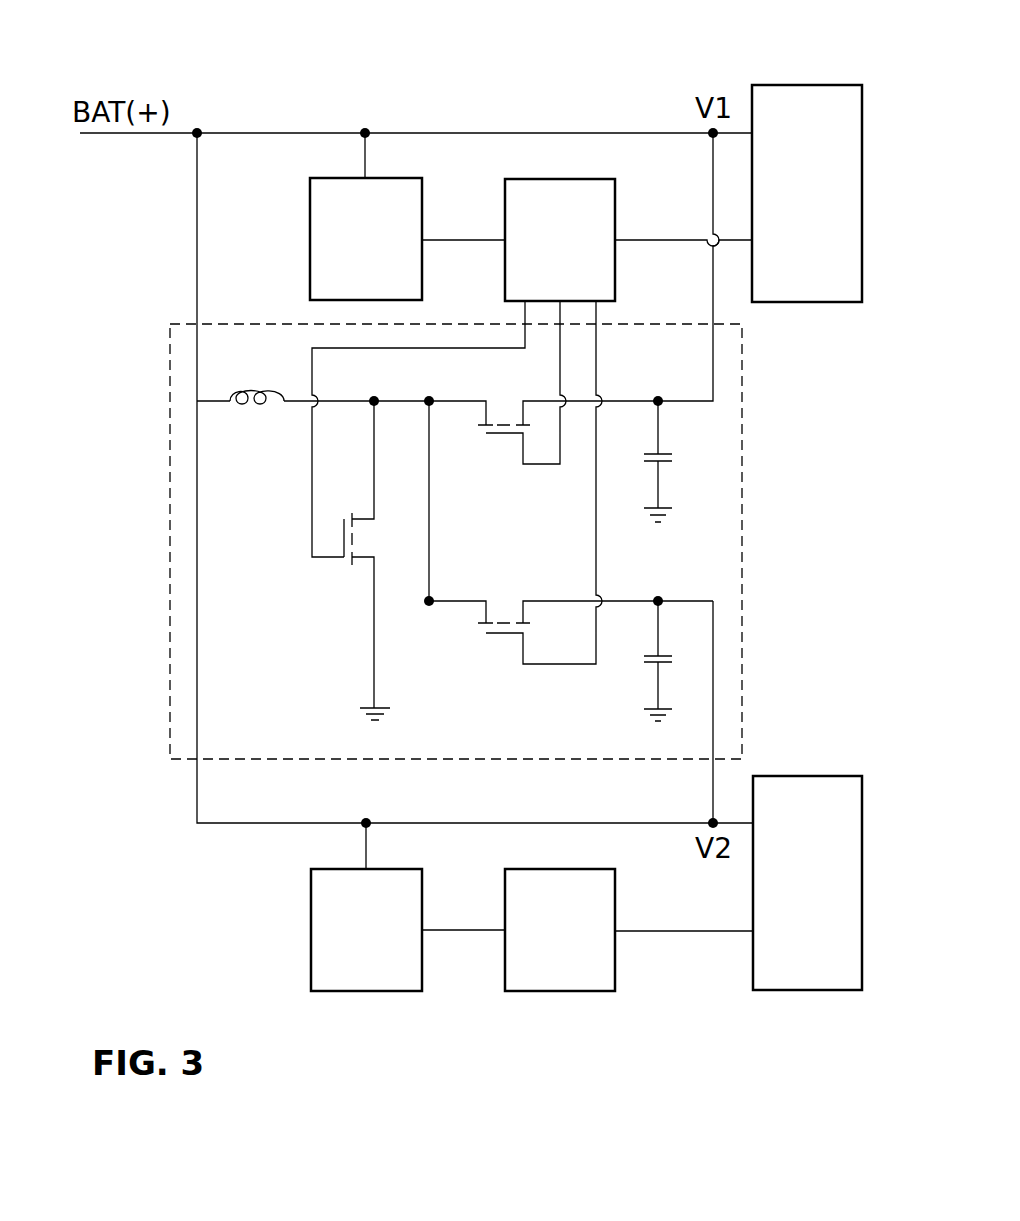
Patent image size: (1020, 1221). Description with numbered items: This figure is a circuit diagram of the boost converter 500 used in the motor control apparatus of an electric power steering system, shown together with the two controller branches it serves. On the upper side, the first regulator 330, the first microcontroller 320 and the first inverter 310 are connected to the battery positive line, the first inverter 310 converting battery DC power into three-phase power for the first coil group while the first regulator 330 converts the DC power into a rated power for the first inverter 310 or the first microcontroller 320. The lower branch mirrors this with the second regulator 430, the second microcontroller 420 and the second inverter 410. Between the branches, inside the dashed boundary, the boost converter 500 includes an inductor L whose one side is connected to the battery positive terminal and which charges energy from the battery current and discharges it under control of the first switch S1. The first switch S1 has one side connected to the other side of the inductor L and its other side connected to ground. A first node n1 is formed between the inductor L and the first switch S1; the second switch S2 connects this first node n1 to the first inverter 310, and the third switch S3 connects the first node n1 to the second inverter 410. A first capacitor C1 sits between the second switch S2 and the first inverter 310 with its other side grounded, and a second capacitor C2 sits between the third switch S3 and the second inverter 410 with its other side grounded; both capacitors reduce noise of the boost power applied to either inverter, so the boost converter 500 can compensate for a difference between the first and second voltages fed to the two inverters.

The first inverter 310 is at (807, 85).
The first microcontroller 320 is at (555, 179).
The first regulator 330 is at (403, 178).
The second inverter 410 is at (805, 990).
The second microcontroller 420 is at (557, 991).
The second regulator 430 is at (363, 991).
The boost converter 500 is at (152, 512).
The inductor L is at (285, 382).
The first node n1 is at (395, 386).
The first switch S1 is at (352, 539).
The second switch S2 is at (503, 425).
The third switch S3 is at (503, 623).
The first capacitor C1 is at (677, 459).
The second capacitor C2 is at (677, 658).